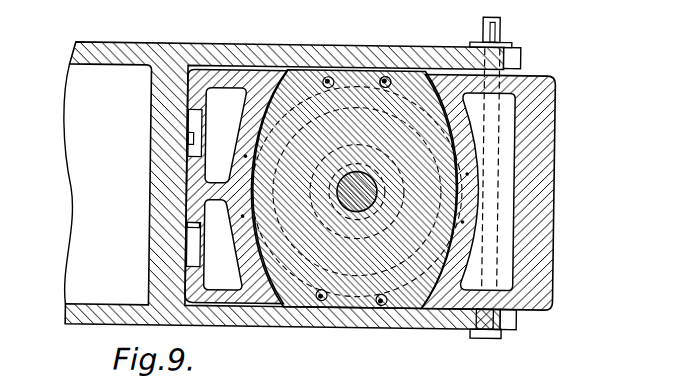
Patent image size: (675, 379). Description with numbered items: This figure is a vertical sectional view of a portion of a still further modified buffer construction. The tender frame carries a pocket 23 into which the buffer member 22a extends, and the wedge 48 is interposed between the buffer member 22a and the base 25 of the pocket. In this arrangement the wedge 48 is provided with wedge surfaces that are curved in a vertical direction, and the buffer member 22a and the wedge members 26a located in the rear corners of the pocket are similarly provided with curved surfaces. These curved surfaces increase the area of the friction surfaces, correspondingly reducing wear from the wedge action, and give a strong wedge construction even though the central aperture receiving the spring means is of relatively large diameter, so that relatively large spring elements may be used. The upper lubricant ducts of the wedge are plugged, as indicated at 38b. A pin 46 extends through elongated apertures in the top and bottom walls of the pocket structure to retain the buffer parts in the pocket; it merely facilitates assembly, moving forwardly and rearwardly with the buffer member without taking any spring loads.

The buffer member 22a is at (538, 118).
The pocket 23 is at (314, 56).
The base of the pocket 25 is at (189, 138).
The wedge members 26a is at (248, 45).
The plug 38b is at (333, 78).
The pin 46 is at (499, 30).
The wedge 48 is at (378, 80).